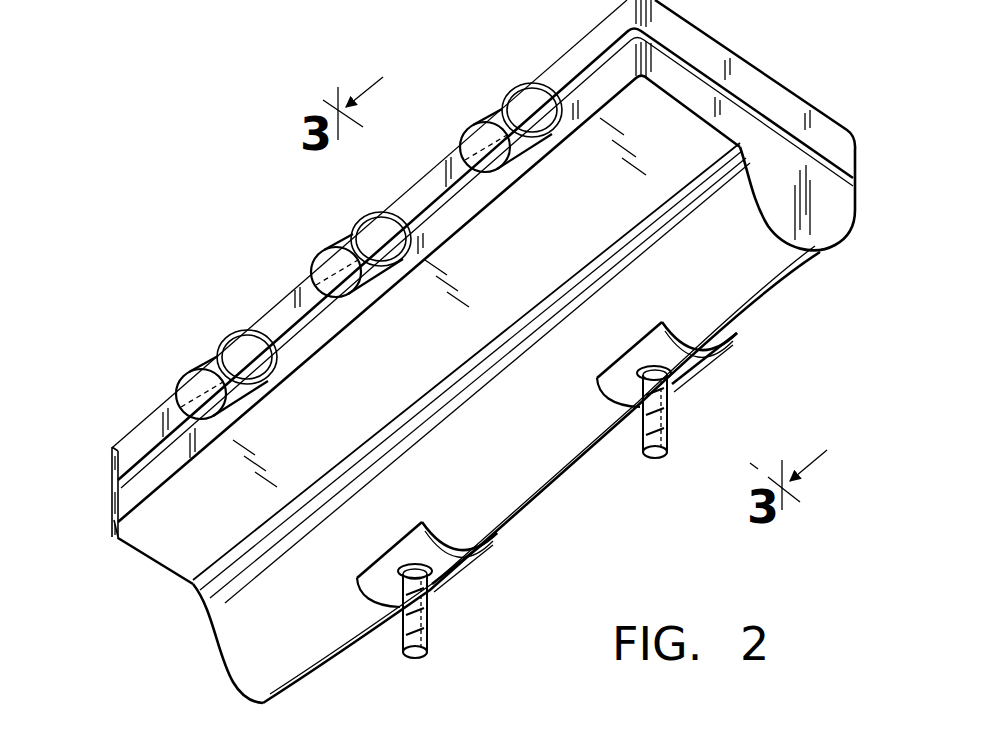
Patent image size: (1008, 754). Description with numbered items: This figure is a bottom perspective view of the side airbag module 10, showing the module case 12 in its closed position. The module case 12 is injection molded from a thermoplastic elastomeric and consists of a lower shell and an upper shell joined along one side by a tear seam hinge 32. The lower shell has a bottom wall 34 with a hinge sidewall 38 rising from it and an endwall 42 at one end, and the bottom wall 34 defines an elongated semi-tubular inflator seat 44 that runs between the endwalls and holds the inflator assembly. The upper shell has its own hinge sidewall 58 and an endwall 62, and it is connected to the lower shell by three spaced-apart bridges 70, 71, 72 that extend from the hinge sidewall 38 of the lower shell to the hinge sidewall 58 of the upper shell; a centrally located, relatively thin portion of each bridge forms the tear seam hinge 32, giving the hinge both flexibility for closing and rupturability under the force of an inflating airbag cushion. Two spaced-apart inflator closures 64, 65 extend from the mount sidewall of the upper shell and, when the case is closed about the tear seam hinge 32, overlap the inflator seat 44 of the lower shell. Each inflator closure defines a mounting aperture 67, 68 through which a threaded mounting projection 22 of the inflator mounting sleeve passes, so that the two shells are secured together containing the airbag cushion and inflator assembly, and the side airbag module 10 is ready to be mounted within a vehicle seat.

The side airbag module 10 is at (298, 162).
The module case 12 is at (216, 661).
The mounting projection 22 is at (430, 621).
The tear seam hinge 32 is at (182, 378).
The bottom wall 34 is at (645, 90).
The hinge sidewall 38 is at (112, 520).
The endwall 42 is at (843, 215).
The inflator seat 44 is at (792, 290).
The hinge sidewall 58 is at (112, 452).
The endwall 62 is at (772, 92).
The inflator closure 64 is at (603, 388).
The inflator closure 65 is at (380, 570).
The mounting aperture 67 is at (613, 408).
The mounting aperture 68 is at (373, 606).
The bridge 70 is at (240, 330).
The bridge 71 is at (379, 212).
The bridge 72 is at (527, 83).